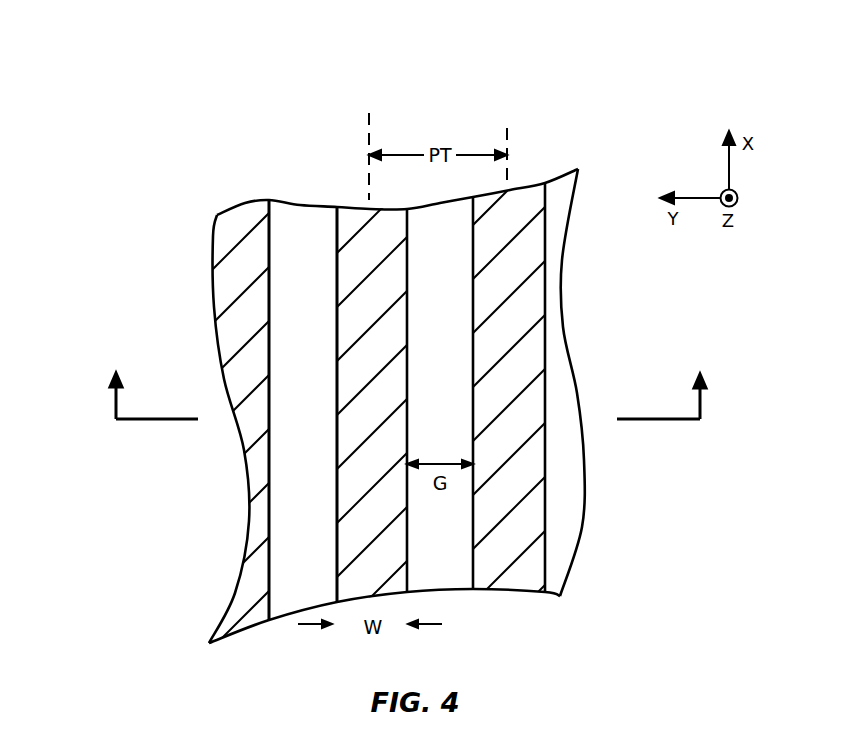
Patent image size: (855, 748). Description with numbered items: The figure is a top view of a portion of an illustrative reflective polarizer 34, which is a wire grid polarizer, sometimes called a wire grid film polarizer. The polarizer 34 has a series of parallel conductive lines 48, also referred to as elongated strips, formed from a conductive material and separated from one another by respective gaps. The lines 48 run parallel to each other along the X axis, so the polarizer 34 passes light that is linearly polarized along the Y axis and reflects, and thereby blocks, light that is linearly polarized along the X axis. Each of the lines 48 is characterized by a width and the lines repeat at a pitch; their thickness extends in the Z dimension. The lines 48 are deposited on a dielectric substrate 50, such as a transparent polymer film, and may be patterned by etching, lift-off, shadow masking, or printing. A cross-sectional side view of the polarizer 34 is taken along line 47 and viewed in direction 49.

The polarizer 34 is at (542, 76).
The conductive lines 48 is at (240, 217).
The substrate 50 is at (305, 219).
The line 47 is at (153, 421).
The direction 49 is at (116, 400).